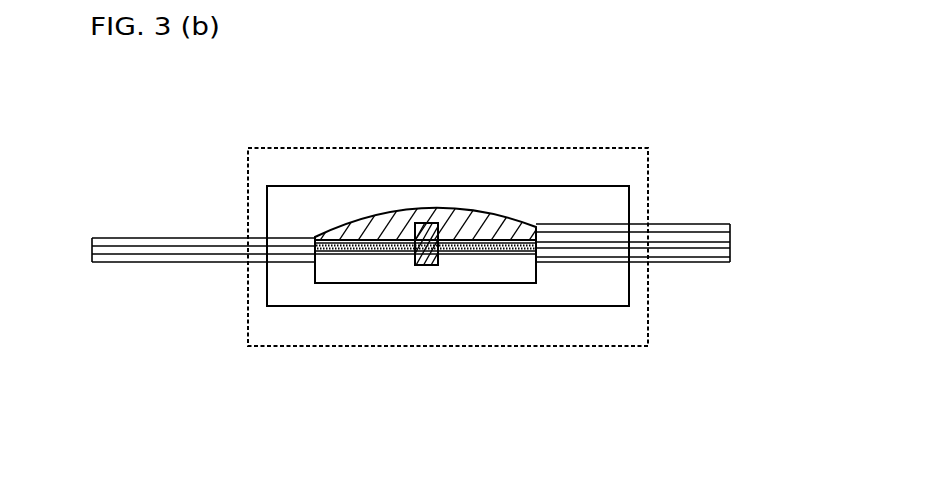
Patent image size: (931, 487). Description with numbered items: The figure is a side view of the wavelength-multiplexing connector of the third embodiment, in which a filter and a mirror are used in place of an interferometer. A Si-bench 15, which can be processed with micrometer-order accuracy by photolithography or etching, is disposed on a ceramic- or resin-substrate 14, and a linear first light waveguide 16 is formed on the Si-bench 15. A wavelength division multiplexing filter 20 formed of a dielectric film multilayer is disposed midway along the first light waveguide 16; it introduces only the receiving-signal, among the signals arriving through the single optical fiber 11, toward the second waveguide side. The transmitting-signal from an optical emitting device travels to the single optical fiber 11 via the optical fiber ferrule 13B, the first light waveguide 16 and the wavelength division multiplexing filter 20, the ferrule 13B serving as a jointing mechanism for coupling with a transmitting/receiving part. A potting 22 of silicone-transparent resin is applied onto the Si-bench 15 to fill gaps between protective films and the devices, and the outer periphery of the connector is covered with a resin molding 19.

The single optical fiber 11 is at (145, 260).
The optical fiber ferrule 13B is at (733, 245).
The ceramic- or resin-substrate 14 is at (598, 306).
The Si-bench 15 is at (353, 267).
The first light waveguide 16 is at (500, 253).
The resin molding 19 is at (288, 148).
The wavelength division multiplexing filter 20 is at (423, 265).
The potting 22 is at (460, 208).